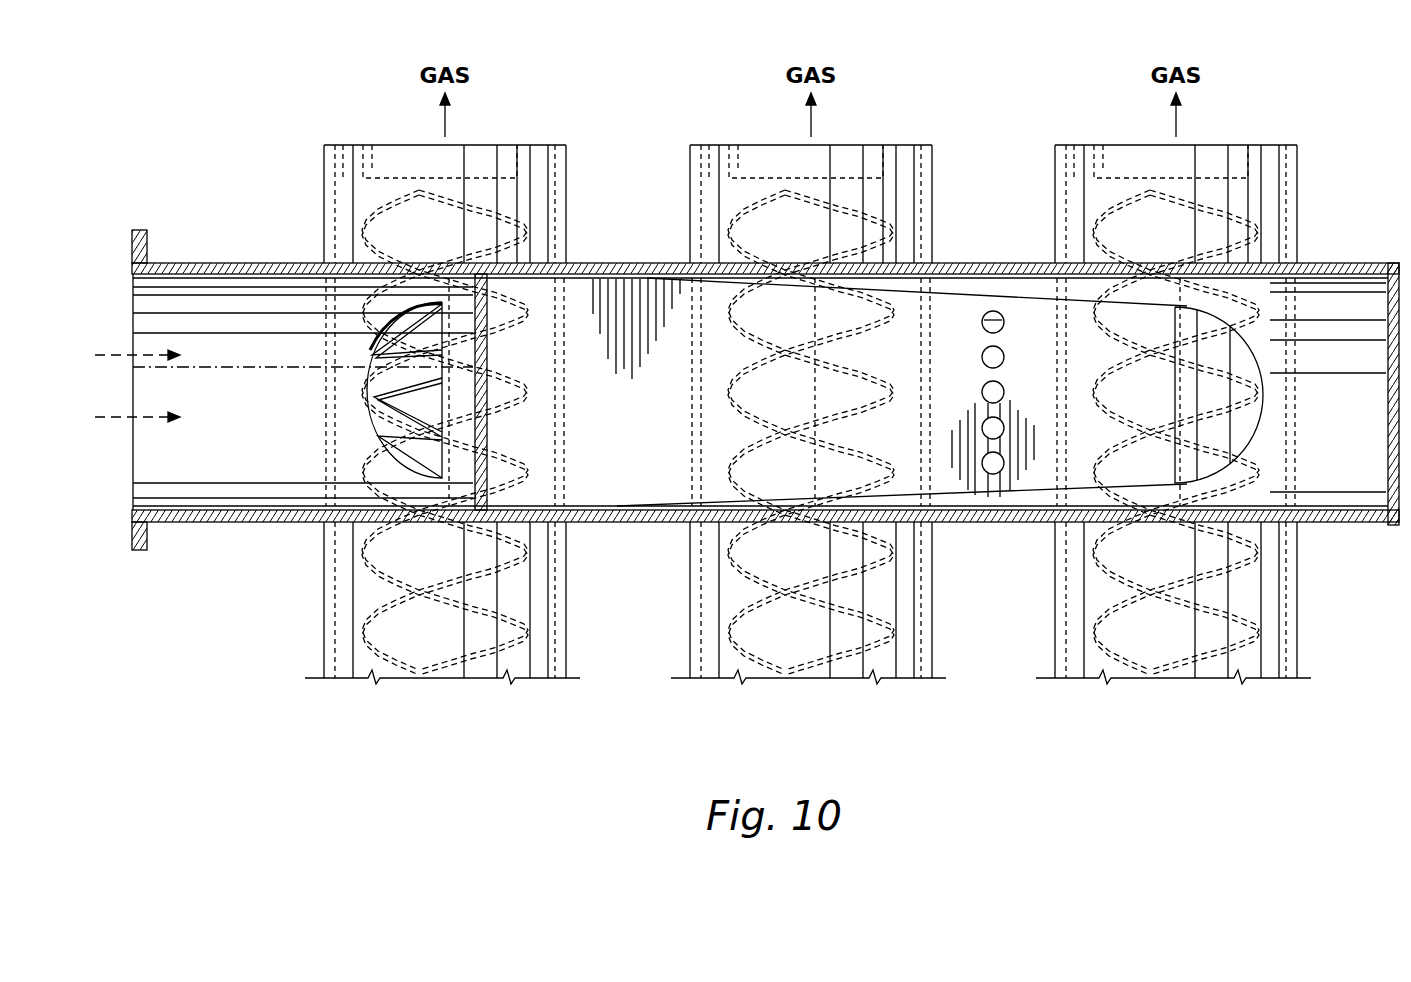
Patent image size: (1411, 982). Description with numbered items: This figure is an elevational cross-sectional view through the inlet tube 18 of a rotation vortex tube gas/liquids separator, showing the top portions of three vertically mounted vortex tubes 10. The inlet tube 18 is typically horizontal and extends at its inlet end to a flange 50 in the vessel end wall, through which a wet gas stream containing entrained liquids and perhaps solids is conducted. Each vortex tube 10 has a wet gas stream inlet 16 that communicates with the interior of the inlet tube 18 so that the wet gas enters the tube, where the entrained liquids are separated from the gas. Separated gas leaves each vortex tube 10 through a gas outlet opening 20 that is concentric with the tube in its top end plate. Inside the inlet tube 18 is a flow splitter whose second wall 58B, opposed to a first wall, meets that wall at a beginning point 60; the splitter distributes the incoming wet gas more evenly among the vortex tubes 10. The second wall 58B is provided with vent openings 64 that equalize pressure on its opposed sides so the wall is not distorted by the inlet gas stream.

The vortex tube 10 is at (568, 181).
The wet gas stream inlet 16 is at (368, 409).
The inlet tube 18 is at (614, 264).
The gas outlet opening 20 is at (373, 166).
The flange 50 is at (143, 230).
The second wall 58B is at (952, 305).
The beginning point 60 is at (476, 458).
The vent openings 64 is at (988, 393).